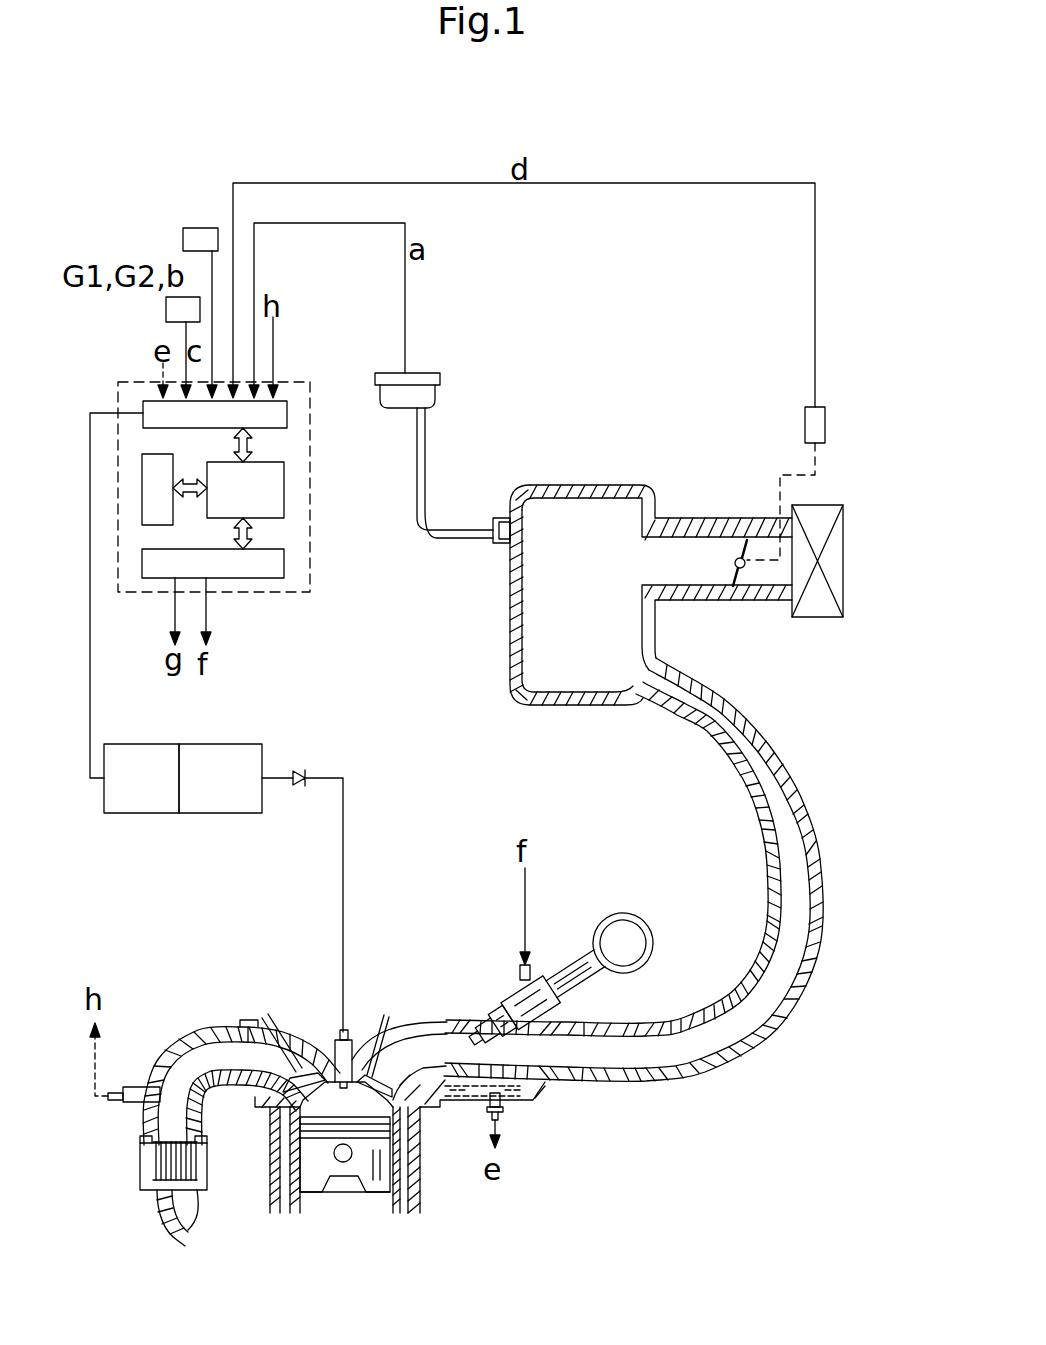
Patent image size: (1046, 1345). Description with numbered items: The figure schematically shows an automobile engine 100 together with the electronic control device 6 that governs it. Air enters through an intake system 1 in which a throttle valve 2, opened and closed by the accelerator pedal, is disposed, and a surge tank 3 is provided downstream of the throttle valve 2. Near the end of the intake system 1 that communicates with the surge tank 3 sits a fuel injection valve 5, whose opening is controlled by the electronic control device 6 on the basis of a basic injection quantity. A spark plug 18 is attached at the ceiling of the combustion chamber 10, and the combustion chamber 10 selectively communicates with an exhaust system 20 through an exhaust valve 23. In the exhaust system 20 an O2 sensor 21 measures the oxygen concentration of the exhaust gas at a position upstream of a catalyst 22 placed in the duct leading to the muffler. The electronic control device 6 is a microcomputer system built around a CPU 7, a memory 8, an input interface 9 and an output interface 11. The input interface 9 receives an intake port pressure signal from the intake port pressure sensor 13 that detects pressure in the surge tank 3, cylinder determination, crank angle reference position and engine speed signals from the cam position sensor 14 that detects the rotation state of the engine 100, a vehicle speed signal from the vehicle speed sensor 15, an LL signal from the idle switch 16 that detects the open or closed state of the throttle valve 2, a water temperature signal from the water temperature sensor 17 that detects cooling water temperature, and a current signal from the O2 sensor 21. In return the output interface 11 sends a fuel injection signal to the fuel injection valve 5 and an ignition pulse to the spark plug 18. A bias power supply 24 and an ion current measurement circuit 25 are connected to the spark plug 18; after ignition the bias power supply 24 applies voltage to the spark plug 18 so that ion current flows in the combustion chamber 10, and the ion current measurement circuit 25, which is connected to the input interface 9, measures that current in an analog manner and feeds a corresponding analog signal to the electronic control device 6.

The intake system 1 is at (760, 678).
The throttle valve 2 is at (745, 573).
The surge tank 3 is at (558, 657).
The fuel injection valve 5 is at (505, 985).
The electronic control device 6 is at (224, 473).
The CPU 7 is at (284, 490).
The memory 8 is at (140, 476).
The input interface 9 is at (287, 400).
The combustion chamber 10 is at (345, 1107).
The output interface 11 is at (255, 578).
The intake port pressure sensor 13 is at (440, 386).
The cam position sensor 14 is at (195, 228).
The vehicle speed sensor 15 is at (166, 311).
The idle switch 16 is at (826, 425).
The water temperature sensor 17 is at (507, 1113).
The spark plug 18 is at (358, 1043).
The exhaust system 20 is at (231, 1020).
The O2 sensor 21 is at (130, 1103).
The catalyst 22 is at (185, 1180).
The exhaust valve 23 is at (258, 1020).
The bias power supply 24 is at (235, 744).
The ion current measurement circuit 25 is at (103, 812).
The engine 100 is at (302, 985).